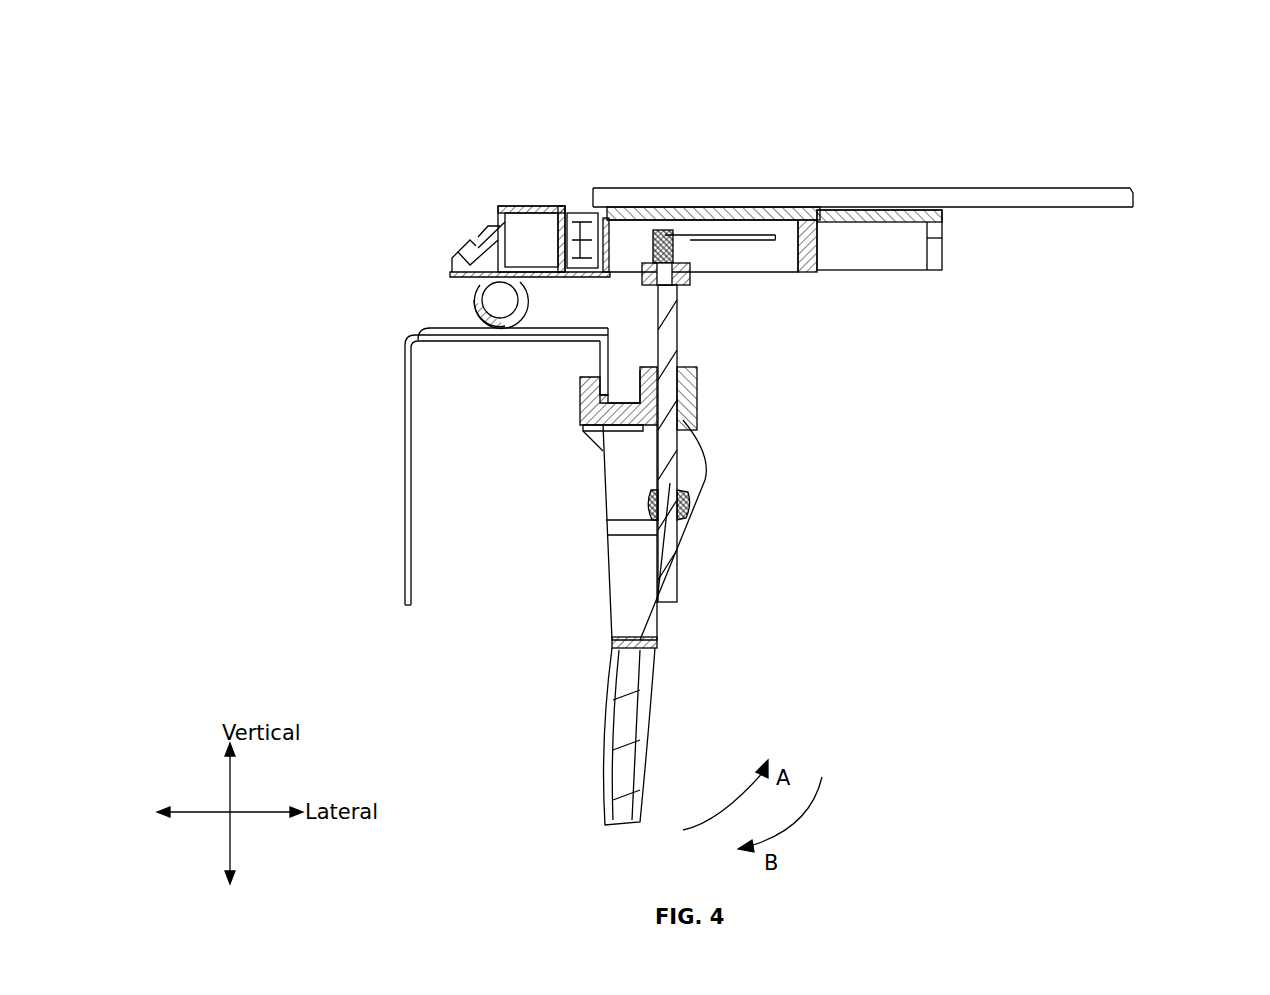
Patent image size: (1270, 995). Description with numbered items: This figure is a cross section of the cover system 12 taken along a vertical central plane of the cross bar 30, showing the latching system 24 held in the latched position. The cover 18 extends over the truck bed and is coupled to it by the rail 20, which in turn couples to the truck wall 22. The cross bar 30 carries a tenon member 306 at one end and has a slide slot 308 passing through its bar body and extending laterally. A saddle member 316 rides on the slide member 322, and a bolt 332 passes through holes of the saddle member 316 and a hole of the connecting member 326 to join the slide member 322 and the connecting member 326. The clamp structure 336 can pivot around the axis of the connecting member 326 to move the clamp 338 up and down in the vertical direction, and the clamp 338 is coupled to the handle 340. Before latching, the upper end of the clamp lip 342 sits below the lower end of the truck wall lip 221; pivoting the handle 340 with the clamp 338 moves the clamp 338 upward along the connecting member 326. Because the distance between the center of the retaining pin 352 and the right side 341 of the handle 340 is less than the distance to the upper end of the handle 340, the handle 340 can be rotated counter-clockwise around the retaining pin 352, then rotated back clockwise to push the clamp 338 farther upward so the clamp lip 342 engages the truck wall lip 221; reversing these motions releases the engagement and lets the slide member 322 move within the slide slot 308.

The cover system 12 is at (785, 45).
The cover 18 is at (1124, 193).
The rail 20 is at (506, 208).
The truck wall 22 is at (403, 378).
The latching system 24 is at (932, 92).
The cross bar 30 is at (920, 322).
The truck wall lip 221 is at (603, 358).
The tenon member 306 is at (938, 250).
The slide slot 308 is at (768, 232).
The saddle member 316 is at (656, 258).
The slide member 322 is at (666, 250).
The connecting member 326 is at (666, 350).
The bolt 332 is at (690, 280).
The clamp structure 336 is at (865, 478).
The clamp 338 is at (697, 395).
The handle 340 is at (653, 626).
The right side of handle 341 is at (697, 512).
The clamp lip 342 is at (583, 385).
The retaining pin 352 is at (692, 500).